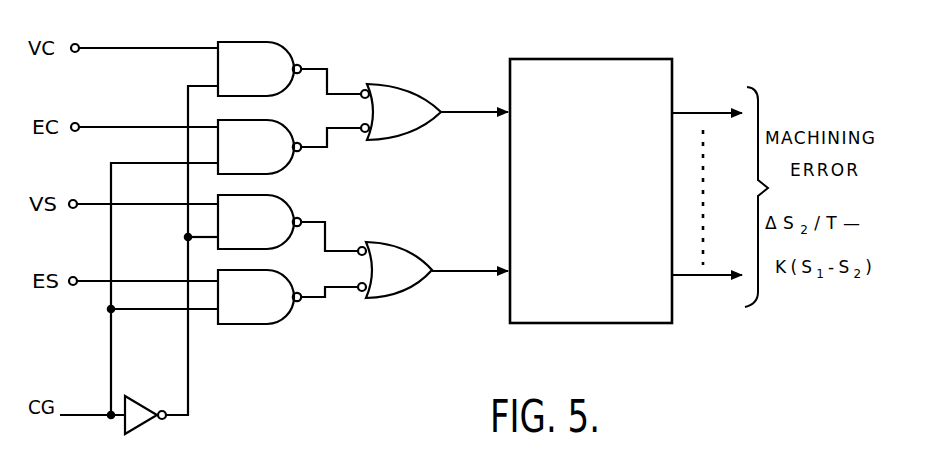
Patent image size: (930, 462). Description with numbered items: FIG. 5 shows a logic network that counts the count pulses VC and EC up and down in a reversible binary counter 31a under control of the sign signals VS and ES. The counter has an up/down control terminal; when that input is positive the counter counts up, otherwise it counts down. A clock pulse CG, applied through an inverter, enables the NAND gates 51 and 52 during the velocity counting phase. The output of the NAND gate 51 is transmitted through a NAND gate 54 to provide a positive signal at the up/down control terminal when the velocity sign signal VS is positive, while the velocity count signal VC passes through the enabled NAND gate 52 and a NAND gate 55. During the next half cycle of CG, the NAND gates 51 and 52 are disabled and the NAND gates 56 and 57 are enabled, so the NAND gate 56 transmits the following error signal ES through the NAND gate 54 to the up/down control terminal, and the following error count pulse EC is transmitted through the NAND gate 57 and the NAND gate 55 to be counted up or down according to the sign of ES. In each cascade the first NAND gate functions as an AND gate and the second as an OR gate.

The NAND gate 52 is at (288, 42).
The NAND gate 57 is at (284, 125).
The NAND gate 51 is at (290, 202).
The NAND gate 56 is at (277, 272).
The NAND gate 55 is at (397, 85).
The NAND gate 54 is at (400, 250).
The binary counter 31a is at (612, 58).